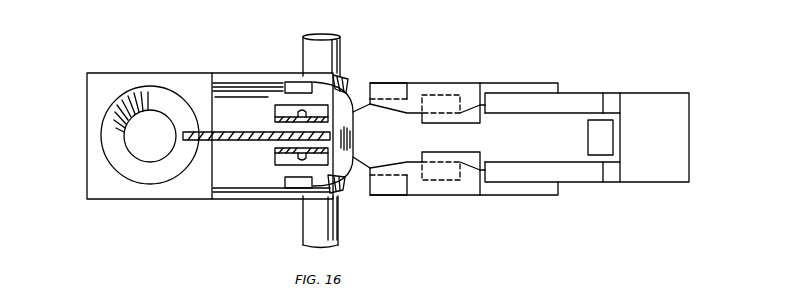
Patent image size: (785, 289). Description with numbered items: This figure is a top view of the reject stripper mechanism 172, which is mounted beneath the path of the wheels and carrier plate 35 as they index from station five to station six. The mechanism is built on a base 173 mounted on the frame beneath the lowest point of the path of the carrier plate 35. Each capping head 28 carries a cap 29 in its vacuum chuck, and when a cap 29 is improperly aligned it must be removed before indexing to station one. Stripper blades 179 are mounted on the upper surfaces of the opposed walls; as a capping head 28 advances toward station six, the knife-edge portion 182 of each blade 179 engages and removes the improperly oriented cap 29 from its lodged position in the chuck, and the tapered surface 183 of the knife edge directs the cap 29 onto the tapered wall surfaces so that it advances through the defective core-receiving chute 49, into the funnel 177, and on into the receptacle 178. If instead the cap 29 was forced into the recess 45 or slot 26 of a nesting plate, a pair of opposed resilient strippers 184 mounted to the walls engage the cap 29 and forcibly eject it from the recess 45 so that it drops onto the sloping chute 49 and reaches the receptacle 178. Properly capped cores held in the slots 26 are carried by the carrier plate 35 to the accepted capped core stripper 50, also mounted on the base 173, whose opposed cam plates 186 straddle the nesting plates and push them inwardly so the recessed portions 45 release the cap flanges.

The slot 26 is at (299, 158).
The capping head 28 is at (342, 47).
The cap 29 is at (301, 114).
The carrier plate 35 is at (224, 132).
The recess 45 is at (275, 160).
The defective core-receiving chute 49 is at (197, 92).
The accepted capped core stripper 50 is at (465, 78).
The reject stripper mechanism 172 is at (257, 53).
The base 173 is at (527, 83).
The funnel 177 is at (110, 127).
The receptacle 178 is at (189, 206).
The stripper blade 179 is at (348, 73).
The knife-edge portion 182 is at (348, 88).
The tapered surface 183 is at (337, 72).
The resilient stripper 184 is at (295, 84).
The cam plate 186 is at (443, 83).